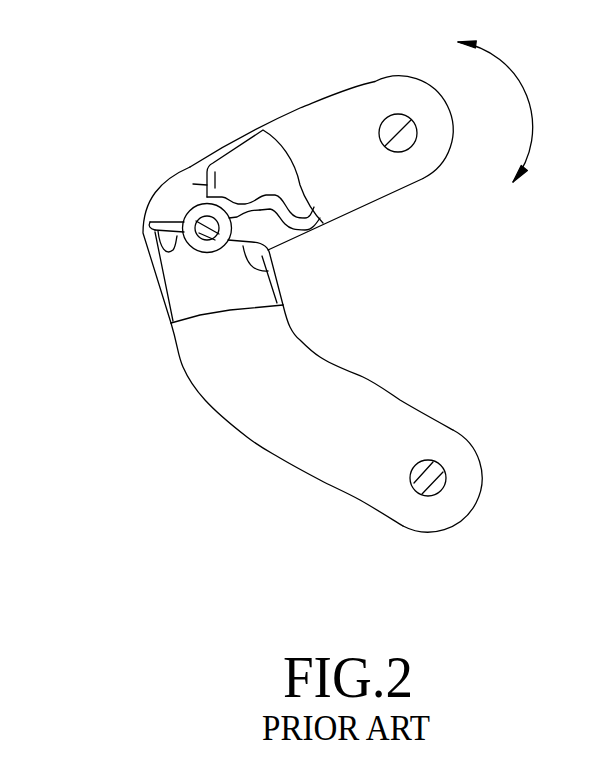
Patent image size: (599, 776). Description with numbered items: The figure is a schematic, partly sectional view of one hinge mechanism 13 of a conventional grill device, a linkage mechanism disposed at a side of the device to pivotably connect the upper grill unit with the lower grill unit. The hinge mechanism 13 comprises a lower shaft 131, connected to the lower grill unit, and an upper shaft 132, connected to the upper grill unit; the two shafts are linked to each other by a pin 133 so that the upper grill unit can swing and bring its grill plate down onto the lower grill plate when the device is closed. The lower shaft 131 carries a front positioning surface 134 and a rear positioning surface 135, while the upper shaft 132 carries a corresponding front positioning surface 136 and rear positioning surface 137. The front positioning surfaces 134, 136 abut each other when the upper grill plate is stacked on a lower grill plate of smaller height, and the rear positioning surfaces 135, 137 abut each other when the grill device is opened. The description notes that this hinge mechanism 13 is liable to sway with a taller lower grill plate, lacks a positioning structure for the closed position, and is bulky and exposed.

The hinge mechanism 13 is at (138, 386).
The lower shaft 131 is at (268, 427).
The upper shaft 132 is at (324, 135).
The pin 133 is at (204, 226).
The front positioning surface 134 is at (264, 272).
The rear positioning surface 135 is at (165, 252).
The front positioning surface 136 is at (280, 213).
The rear positioning surface 137 is at (216, 172).